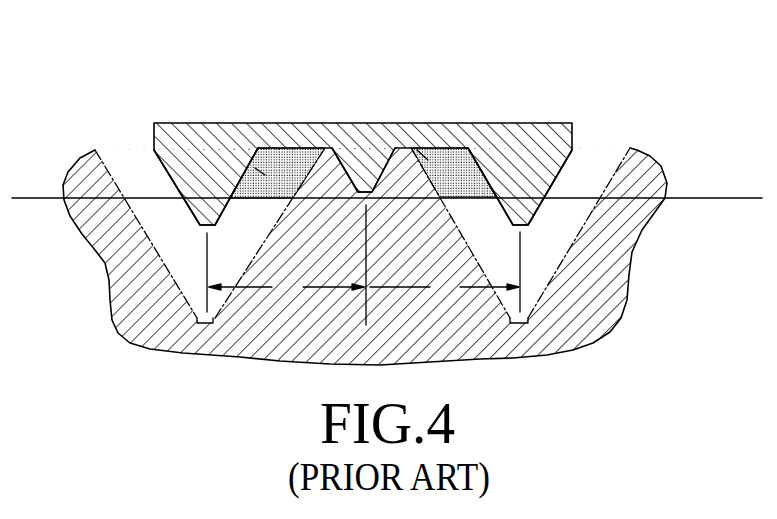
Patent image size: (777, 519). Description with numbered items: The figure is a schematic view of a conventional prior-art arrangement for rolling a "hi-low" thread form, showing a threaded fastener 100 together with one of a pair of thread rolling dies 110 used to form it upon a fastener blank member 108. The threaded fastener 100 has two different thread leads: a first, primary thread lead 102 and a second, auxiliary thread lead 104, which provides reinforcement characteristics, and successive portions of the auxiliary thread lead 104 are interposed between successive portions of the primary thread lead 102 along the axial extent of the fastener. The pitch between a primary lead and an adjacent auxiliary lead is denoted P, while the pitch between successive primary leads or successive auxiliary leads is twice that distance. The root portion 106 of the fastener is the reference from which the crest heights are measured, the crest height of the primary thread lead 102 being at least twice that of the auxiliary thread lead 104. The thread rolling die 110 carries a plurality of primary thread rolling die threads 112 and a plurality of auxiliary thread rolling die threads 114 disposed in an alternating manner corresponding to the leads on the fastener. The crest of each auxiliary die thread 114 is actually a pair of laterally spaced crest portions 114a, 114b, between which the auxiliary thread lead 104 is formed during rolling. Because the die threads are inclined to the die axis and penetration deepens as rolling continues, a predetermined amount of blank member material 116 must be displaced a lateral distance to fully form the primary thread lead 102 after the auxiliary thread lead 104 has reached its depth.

The threaded fastener 100 is at (387, 199).
The primary thread lead 102 is at (527, 175).
The auxiliary thread lead 104 is at (357, 160).
The root portion 106 is at (290, 148).
The fastener blank member 108 is at (146, 197).
The thread rolling die 110 is at (438, 342).
The primary thread rolling die threads 112 is at (122, 275).
The auxiliary thread rolling die threads 114 is at (389, 165).
The crest portion 114a is at (318, 153).
The crest portion 114b is at (403, 150).
The blank member material 116 is at (243, 155).